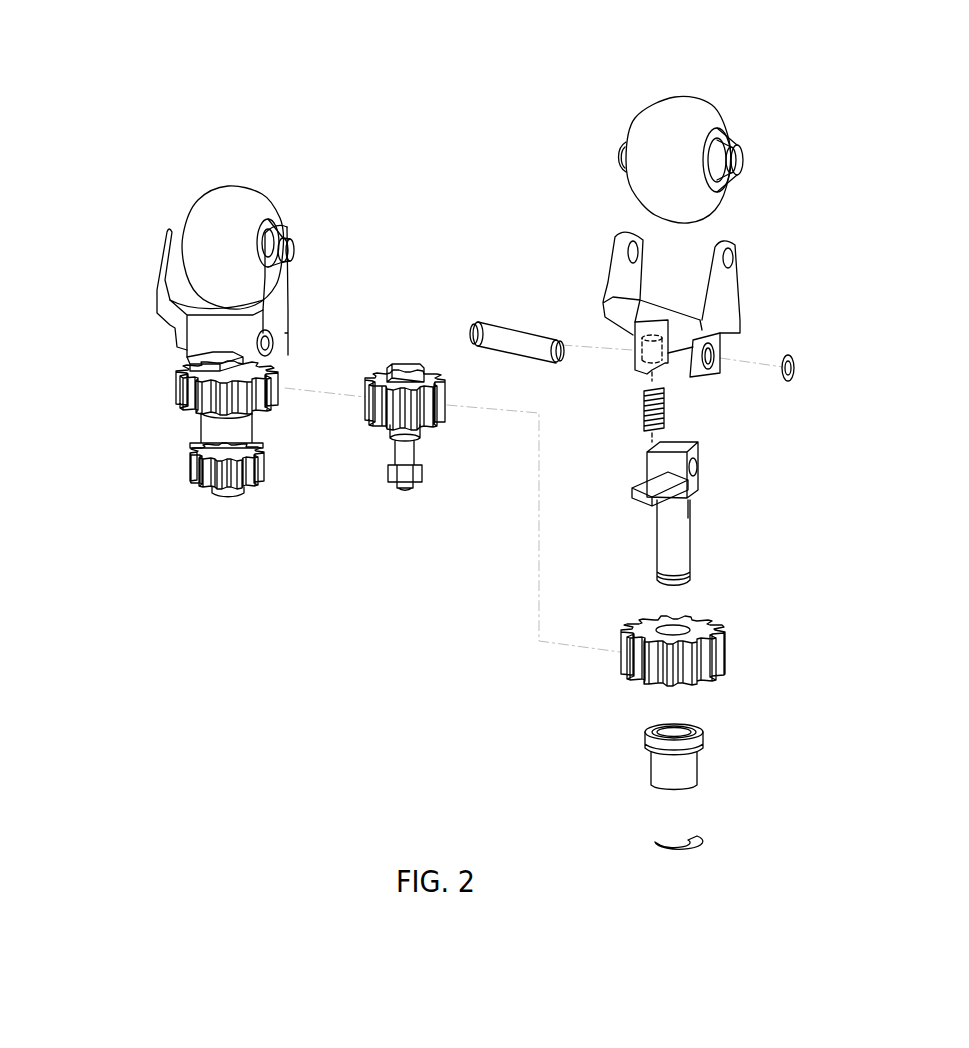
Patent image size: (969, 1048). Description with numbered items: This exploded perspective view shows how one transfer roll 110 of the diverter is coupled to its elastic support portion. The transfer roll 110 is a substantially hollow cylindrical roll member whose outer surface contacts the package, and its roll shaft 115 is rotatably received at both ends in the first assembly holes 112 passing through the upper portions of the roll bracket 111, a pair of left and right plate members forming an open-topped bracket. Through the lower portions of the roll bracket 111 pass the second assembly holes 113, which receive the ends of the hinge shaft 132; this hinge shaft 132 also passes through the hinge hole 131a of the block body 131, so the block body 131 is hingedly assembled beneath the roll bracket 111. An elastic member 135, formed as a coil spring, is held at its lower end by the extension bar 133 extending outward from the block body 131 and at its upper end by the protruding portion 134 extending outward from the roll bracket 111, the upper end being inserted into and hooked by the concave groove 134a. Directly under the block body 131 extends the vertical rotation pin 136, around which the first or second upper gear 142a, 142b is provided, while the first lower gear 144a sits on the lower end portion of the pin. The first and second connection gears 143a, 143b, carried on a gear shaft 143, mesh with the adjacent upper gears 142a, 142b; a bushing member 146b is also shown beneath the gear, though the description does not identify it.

The transfer roll 110 is at (223, 205).
The roll bracket 111 is at (735, 282).
The first assembly hole 112 is at (728, 260).
The second assembly hole 113 is at (712, 358).
The roll shaft 115 is at (737, 165).
The block body 131 is at (682, 440).
The hinge hole 131a is at (700, 468).
The hinge shaft 132 is at (493, 330).
The extension bar 133 is at (645, 478).
The protruding portion 134 is at (604, 325).
The concave groove 134a is at (625, 345).
The elastic member 135 is at (668, 405).
The vertical rotation pin 136 is at (680, 545).
The first upper gear 142a is at (186, 397).
The second upper gear 142b is at (625, 660).
The gear shaft 143 is at (398, 449).
The first connection gear 143a is at (380, 353).
The second connection gear 143b is at (365, 390).
The first lower gear 144a is at (258, 484).
The bushing 146b is at (665, 770).